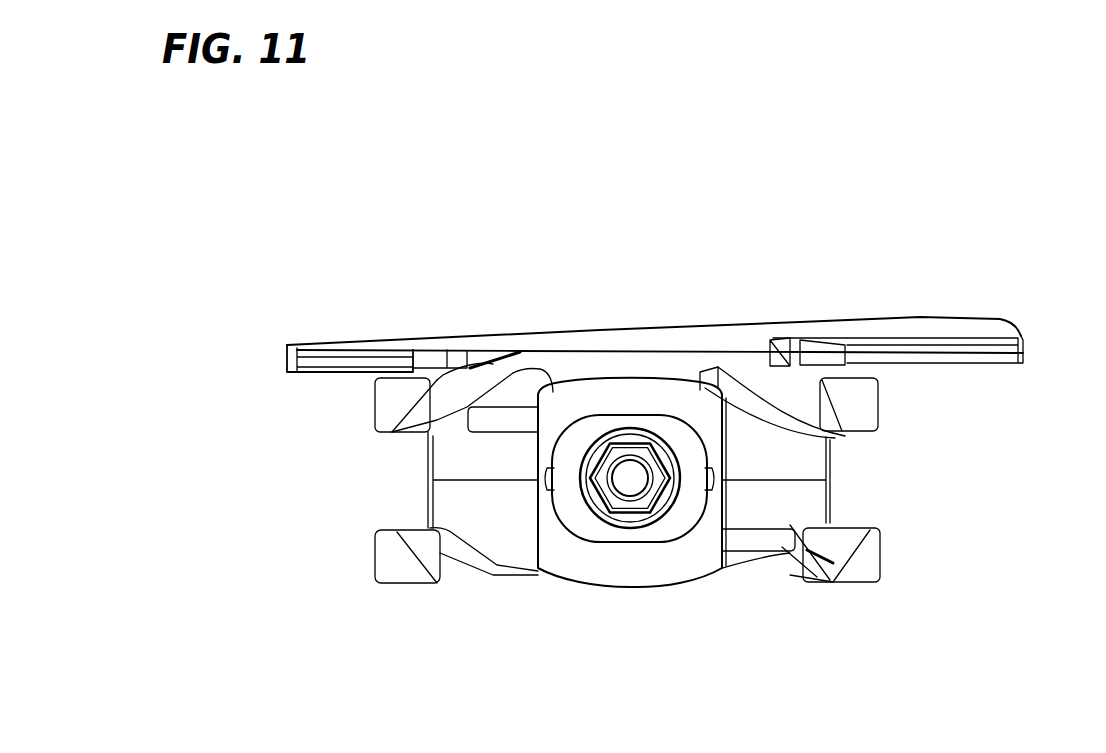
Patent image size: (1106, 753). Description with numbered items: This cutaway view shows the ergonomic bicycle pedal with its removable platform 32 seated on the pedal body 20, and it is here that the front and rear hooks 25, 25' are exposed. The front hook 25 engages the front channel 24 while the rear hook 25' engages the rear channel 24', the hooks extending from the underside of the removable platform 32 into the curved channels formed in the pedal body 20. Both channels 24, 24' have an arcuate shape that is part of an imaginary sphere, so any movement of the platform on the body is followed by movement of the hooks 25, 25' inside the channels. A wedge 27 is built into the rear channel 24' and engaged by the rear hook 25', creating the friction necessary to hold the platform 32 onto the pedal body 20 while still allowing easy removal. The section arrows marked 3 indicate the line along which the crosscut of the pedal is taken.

The pedal body 20 is at (650, 655).
The front channel 24 is at (623, 519).
The rear channel 24' is at (675, 519).
The front hook 25 is at (820, 436).
The rear hook 25' is at (436, 449).
The wedge 27 is at (498, 570).
The removable platform 32 is at (702, 331).
The section line 3- 3 is at (320, 465).